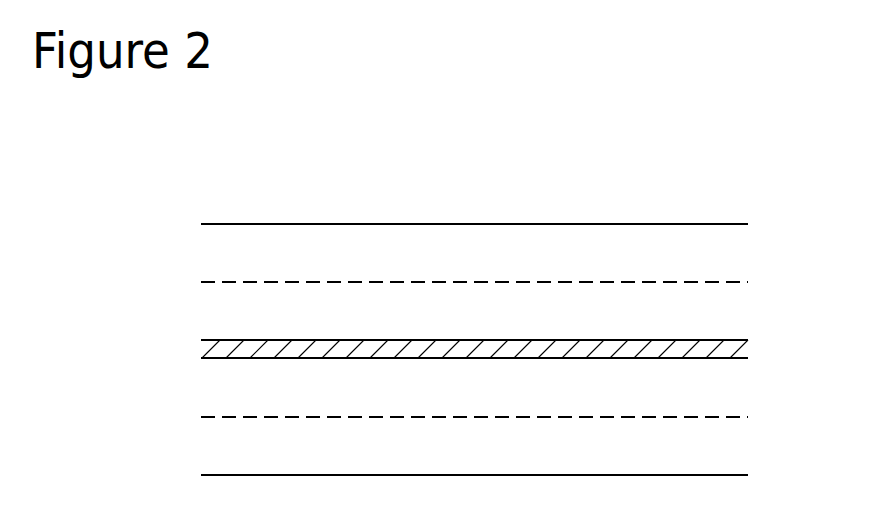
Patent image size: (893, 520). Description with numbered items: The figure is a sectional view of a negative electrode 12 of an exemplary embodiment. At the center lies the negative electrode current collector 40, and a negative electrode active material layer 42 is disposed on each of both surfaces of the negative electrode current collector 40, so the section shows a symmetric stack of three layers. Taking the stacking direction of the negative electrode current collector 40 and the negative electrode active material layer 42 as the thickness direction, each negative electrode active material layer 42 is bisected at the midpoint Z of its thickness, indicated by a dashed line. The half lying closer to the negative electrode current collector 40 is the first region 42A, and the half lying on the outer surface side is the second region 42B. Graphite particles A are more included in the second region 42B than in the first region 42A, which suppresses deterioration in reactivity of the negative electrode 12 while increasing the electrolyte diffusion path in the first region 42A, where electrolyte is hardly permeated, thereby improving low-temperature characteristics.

The negative electrode 12 is at (747, 176).
The negative electrode current collector 40 is at (204, 349).
The negative electrode active material layer 42 is at (828, 238).
The first region 42A is at (743, 311).
The second region 42B is at (743, 257).
The midpoint Z is at (214, 283).